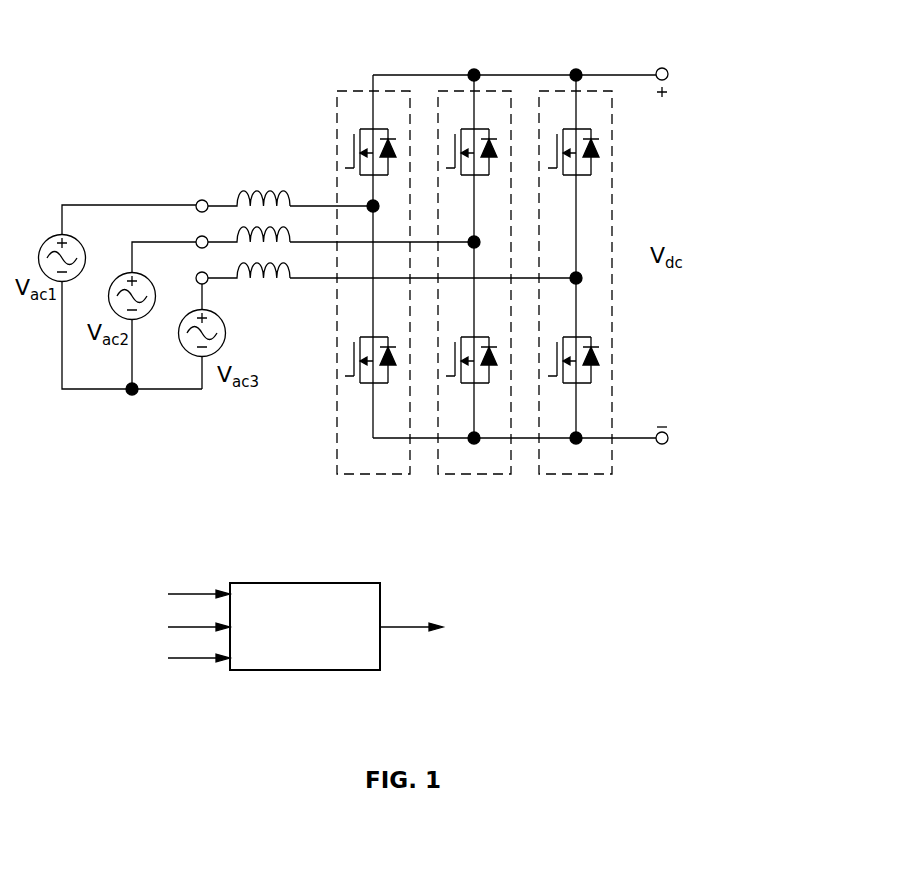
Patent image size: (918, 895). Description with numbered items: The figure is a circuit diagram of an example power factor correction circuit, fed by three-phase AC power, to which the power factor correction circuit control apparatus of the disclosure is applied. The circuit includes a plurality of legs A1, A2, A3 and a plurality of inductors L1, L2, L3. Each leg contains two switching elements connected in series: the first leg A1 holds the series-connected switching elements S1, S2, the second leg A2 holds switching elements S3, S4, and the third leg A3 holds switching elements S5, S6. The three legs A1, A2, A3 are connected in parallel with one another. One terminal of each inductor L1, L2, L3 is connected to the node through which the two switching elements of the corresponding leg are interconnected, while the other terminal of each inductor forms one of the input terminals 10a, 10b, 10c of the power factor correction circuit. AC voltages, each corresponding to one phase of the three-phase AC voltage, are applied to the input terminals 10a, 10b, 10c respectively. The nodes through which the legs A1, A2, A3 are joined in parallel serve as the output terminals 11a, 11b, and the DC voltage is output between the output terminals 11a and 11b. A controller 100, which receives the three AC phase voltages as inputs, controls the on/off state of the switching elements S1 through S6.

The input terminal 10a is at (204, 199).
The input terminal 10b is at (200, 236).
The input terminal 10c is at (206, 282).
The output terminal 11a is at (666, 68).
The output terminal 11b is at (662, 445).
The controller 100 is at (283, 583).
The leg A1 is at (373, 314).
The leg A2 is at (474, 314).
The leg A3 is at (575, 314).
The inductor L1 is at (265, 192).
The inductor L2 is at (265, 228).
The inductor L3 is at (265, 264).
The switching element S1 is at (375, 165).
The switching element S2 is at (375, 376).
The switching element S3 is at (476, 165).
The switching element S4 is at (476, 376).
The switching element S5 is at (578, 165).
The switching element S6 is at (578, 376).